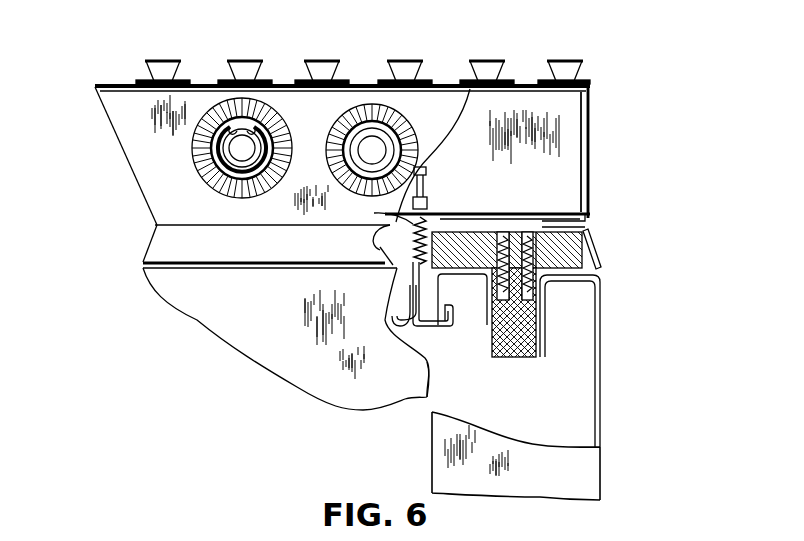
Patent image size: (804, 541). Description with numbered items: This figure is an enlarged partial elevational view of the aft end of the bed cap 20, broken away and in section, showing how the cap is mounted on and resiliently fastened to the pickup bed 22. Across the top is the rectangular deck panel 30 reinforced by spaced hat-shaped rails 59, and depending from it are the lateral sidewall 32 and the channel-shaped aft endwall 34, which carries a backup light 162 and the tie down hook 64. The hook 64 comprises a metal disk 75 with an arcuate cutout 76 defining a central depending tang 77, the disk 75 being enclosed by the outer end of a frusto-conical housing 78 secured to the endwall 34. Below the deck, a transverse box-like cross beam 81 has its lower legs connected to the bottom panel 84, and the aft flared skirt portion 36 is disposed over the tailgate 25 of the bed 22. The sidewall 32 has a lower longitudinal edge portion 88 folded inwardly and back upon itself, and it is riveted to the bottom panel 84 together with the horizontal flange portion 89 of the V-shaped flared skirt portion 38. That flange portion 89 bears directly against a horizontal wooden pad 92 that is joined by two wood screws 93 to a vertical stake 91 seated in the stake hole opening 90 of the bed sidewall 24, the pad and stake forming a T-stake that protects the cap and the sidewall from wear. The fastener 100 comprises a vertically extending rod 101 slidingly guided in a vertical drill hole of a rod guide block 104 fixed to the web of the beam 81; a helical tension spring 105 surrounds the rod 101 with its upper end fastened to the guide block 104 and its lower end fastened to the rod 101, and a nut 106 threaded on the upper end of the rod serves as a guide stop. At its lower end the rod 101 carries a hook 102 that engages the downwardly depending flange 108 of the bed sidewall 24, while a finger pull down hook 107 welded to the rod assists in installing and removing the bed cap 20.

The rails 59 is at (158, 60).
The tie down hook 64 is at (169, 126).
The arcuate cutout 76 is at (257, 141).
The backup light 162 is at (372, 150).
The deck panel 30 is at (448, 85).
The bed cap 20 is at (526, 83).
The aft endwall 34 is at (147, 110).
The lateral sidewall 32 is at (592, 113).
The housing 78 is at (200, 138).
The metal disk 75 is at (208, 179).
The central depending tang 77 is at (243, 162).
The aft flared skirt portion 36 is at (262, 250).
The tailgate 25 is at (262, 302).
The cross beam 81 is at (555, 192).
The nut 106 is at (419, 169).
The rod guide block 104 is at (423, 183).
The fastener 100 is at (426, 210).
The helical tension spring 105 is at (376, 213).
The bottom panel 84 is at (402, 240).
The wood screws 93 is at (503, 232).
The lower longitudinal edge portion 88 is at (564, 220).
The horizontal flange portion 89 is at (586, 233).
The horizontal pad 92 is at (570, 239).
The flared skirt portion 38 is at (599, 268).
The bed 22 is at (601, 354).
The bed sidewall 24 is at (600, 386).
The rod 101 is at (410, 288).
The finger pull down hook 107 is at (394, 306).
The downwardly depending flange 108 is at (449, 310).
The hook 102 is at (430, 362).
The stake hole opening 90 is at (492, 337).
The vertical stake 91 is at (514, 357).